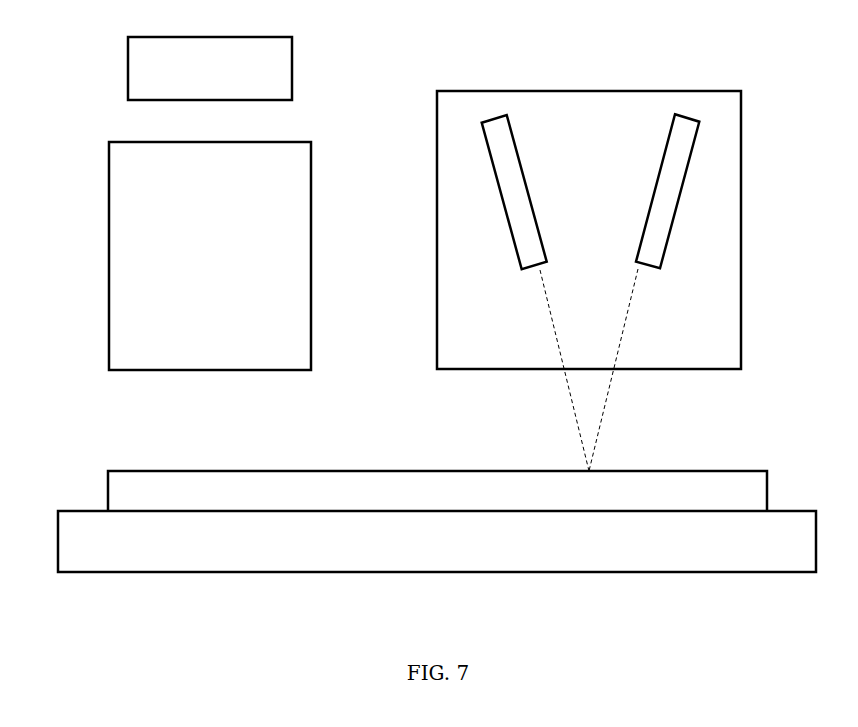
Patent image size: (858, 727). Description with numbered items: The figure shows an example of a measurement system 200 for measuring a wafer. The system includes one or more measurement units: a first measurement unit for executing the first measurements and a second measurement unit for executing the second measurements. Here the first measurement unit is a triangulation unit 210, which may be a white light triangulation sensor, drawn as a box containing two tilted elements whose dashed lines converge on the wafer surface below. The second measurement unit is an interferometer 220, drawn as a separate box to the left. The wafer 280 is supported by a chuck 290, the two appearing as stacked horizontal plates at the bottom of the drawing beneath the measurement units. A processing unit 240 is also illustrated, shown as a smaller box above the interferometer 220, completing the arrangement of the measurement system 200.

The measurement system 200 is at (437, 543).
The triangulation unit 210 is at (589, 281).
The interferometer 220 is at (210, 256).
The processing unit 240 is at (210, 68).
The wafer 280 is at (437, 491).
The chuck 290 is at (437, 541).